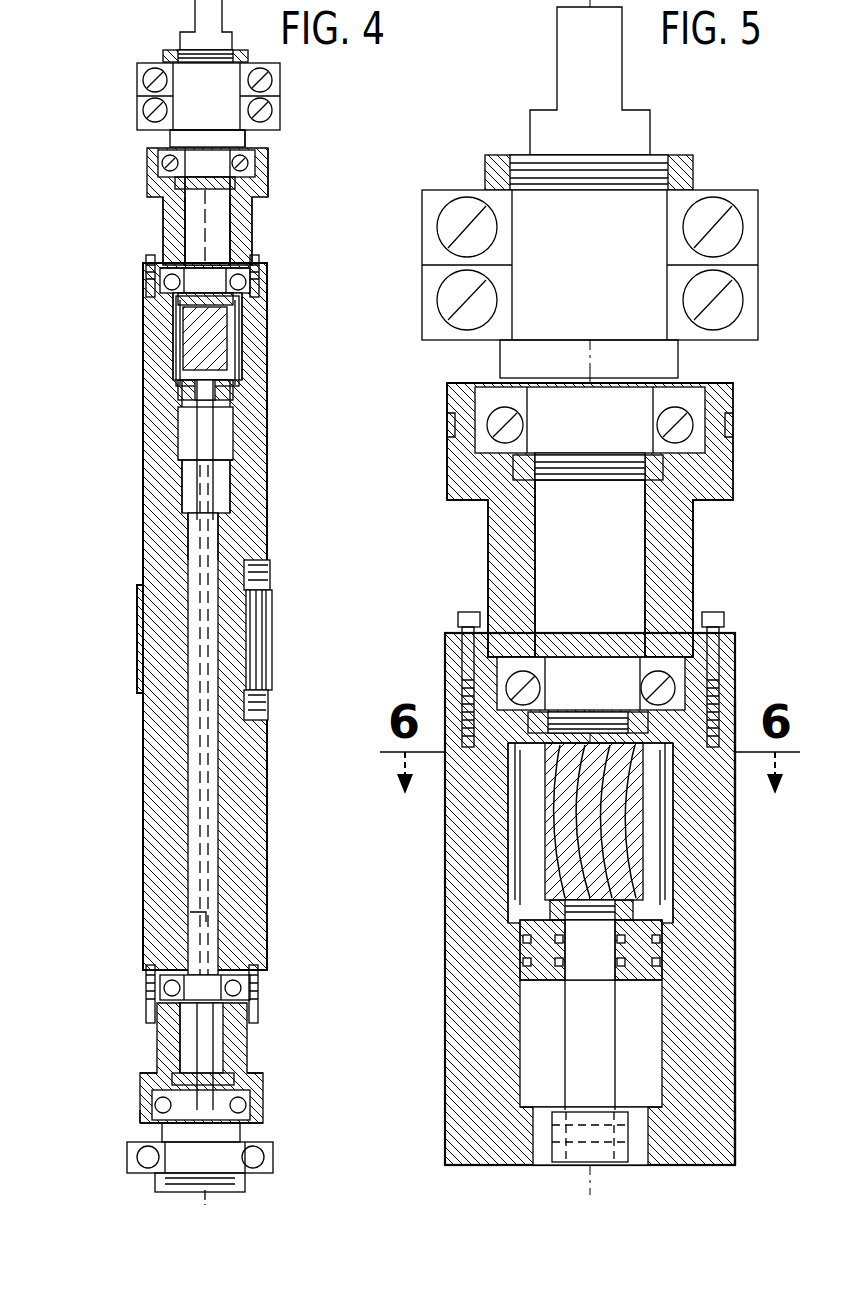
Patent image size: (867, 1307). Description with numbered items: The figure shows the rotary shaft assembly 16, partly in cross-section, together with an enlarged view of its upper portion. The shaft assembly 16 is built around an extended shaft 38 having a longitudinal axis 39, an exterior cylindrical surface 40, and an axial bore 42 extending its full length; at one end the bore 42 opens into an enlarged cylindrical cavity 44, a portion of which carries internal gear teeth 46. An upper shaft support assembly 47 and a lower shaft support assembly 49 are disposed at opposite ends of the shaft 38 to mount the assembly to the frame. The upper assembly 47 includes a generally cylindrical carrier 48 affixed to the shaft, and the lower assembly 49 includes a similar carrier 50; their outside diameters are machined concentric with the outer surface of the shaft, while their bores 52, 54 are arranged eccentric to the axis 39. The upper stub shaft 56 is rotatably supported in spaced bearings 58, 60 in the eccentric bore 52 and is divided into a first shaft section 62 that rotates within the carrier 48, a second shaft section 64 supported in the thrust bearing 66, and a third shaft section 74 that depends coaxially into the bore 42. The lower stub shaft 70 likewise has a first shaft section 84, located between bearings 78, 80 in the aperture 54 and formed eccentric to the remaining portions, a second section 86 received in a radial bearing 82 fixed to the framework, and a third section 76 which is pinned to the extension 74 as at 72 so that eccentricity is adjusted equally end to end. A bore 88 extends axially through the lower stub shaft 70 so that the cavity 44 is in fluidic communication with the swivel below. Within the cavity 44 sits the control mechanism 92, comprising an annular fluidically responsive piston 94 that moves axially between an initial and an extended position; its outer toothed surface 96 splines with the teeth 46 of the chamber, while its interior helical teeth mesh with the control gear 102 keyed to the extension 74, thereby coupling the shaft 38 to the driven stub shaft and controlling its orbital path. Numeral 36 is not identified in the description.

In FIG. 4, the rotary shaft assembly 16 is at (268, 788).
In FIG. 5, the rotary shaft assembly 16 is at (736, 1076).
In FIG. 4, the housing wall 36 is at (268, 822).
In FIG. 4, the extended shaft 38 is at (268, 506).
In FIG. 5, the extended shaft 38 is at (736, 938).
In FIG. 4, the longitudinal axis 39 is at (215, 243).
In FIG. 5, the longitudinal axis 39 is at (595, 356).
In FIG. 4, the exterior cylindrical surface 40 is at (268, 858).
In FIG. 5, the exterior cylindrical surface 40 is at (736, 992).
In FIG. 4, the axial bore 42 is at (196, 802).
In FIG. 5, the axial bore 42 is at (525, 1130).
In FIG. 4, the cavity 44 is at (226, 430).
In FIG. 5, the cavity 44 is at (564, 1052).
In FIG. 4, the internal gear teeth 46 is at (236, 355).
In FIG. 5, the internal gear teeth 46 is at (674, 868).
In FIG. 4, the upper shaft support assembly 47 is at (88, 118).
In FIG. 5, the upper shaft support assembly 47 is at (420, 430).
In FIG. 4, the carrier 48 is at (252, 215).
In FIG. 5, the carrier 48 is at (694, 579).
In FIG. 4, the lower shaft support assembly 49 is at (285, 1118).
In FIG. 4, the carrier 50 is at (246, 1045).
In FIG. 4, the bore 52 is at (185, 228).
In FIG. 5, the bore 52 is at (555, 556).
In FIG. 4, the bore 54 is at (185, 1032).
In FIG. 4, the upper stub shaft 56 is at (236, 240).
In FIG. 5, the upper stub shaft 56 is at (646, 541).
In FIG. 4, the bearing 58 is at (152, 167).
In FIG. 5, the bearing 58 is at (480, 407).
In FIG. 4, the bearing 60 is at (162, 276).
In FIG. 5, the bearing 60 is at (505, 690).
In FIG. 4, the first shaft section 62 is at (222, 217).
In FIG. 5, the first shaft section 62 is at (604, 613).
In FIG. 4, the second shaft section 64 is at (222, 99).
In FIG. 5, the second shaft section 64 is at (530, 208).
In FIG. 4, the shaft assembly thrust bearing 66 is at (140, 80).
In FIG. 5, the shaft assembly thrust bearing 66 is at (430, 220).
In FIG. 4, the lower stub shaft 70 is at (246, 1066).
In FIG. 4, the pin connection 72 is at (246, 522).
In FIG. 4, the third shaft section 74 is at (200, 445).
In FIG. 4, the third shaft section 76 is at (196, 520).
In FIG. 4, the bearing 78 is at (170, 980).
In FIG. 4, the bearing 80 is at (165, 1112).
In FIG. 4, the radial bearing 82 is at (130, 1160).
In FIG. 4, the first shaft section 84 is at (220, 1034).
In FIG. 4, the second shaft section 86 is at (190, 1080).
In FIG. 4, the bore 88 is at (206, 916).
In FIG. 4, the control mechanism 92 is at (168, 360).
In FIG. 5, the control mechanism 92 is at (668, 835).
In FIG. 4, the piston 94 is at (178, 395).
In FIG. 5, the piston 94 is at (666, 892).
In FIG. 4, the outer toothed surface 96 is at (176, 336).
In FIG. 5, the outer toothed surface 96 is at (676, 768).
In FIG. 4, the control gear 102 is at (215, 330).
In FIG. 5, the control gear 102 is at (570, 882).